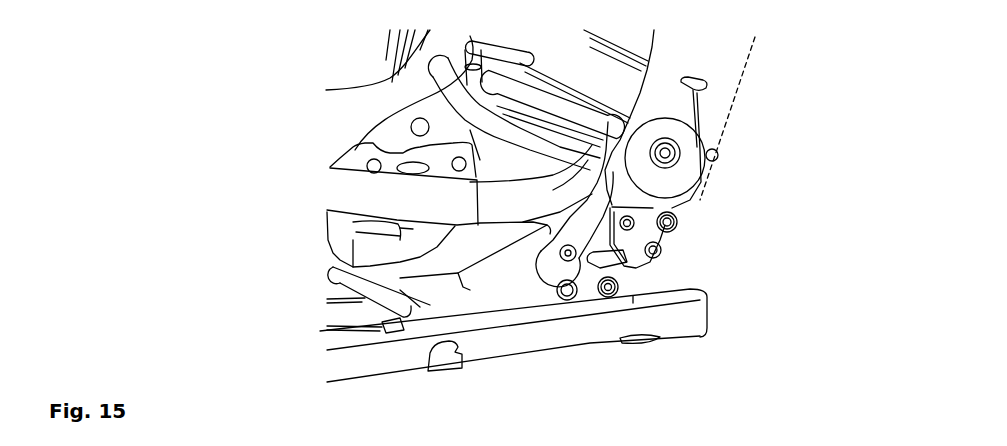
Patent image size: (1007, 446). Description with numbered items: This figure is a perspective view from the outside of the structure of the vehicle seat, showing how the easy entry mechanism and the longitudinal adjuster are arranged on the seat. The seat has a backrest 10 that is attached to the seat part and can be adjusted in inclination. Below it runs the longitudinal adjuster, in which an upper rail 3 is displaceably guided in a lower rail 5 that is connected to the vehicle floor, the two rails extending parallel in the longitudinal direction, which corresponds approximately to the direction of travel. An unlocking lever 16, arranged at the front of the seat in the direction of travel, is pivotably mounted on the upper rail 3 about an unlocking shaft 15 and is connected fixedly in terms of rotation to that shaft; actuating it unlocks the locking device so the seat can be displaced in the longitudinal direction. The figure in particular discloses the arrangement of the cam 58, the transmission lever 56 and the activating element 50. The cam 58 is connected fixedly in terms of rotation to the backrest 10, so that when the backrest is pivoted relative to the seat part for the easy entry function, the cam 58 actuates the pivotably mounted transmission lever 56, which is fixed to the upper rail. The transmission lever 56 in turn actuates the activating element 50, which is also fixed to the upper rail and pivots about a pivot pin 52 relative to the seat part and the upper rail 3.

The backrest 10 is at (710, 102).
The cam 58 is at (622, 188).
The transmission lever 56 is at (645, 217).
The activating element 50 is at (617, 255).
The pivot pin 52 is at (618, 286).
The unlocking shaft 15 is at (355, 277).
The unlocking lever 16 is at (357, 318).
The upper rail 3 is at (347, 343).
The lower rail 5 is at (680, 320).